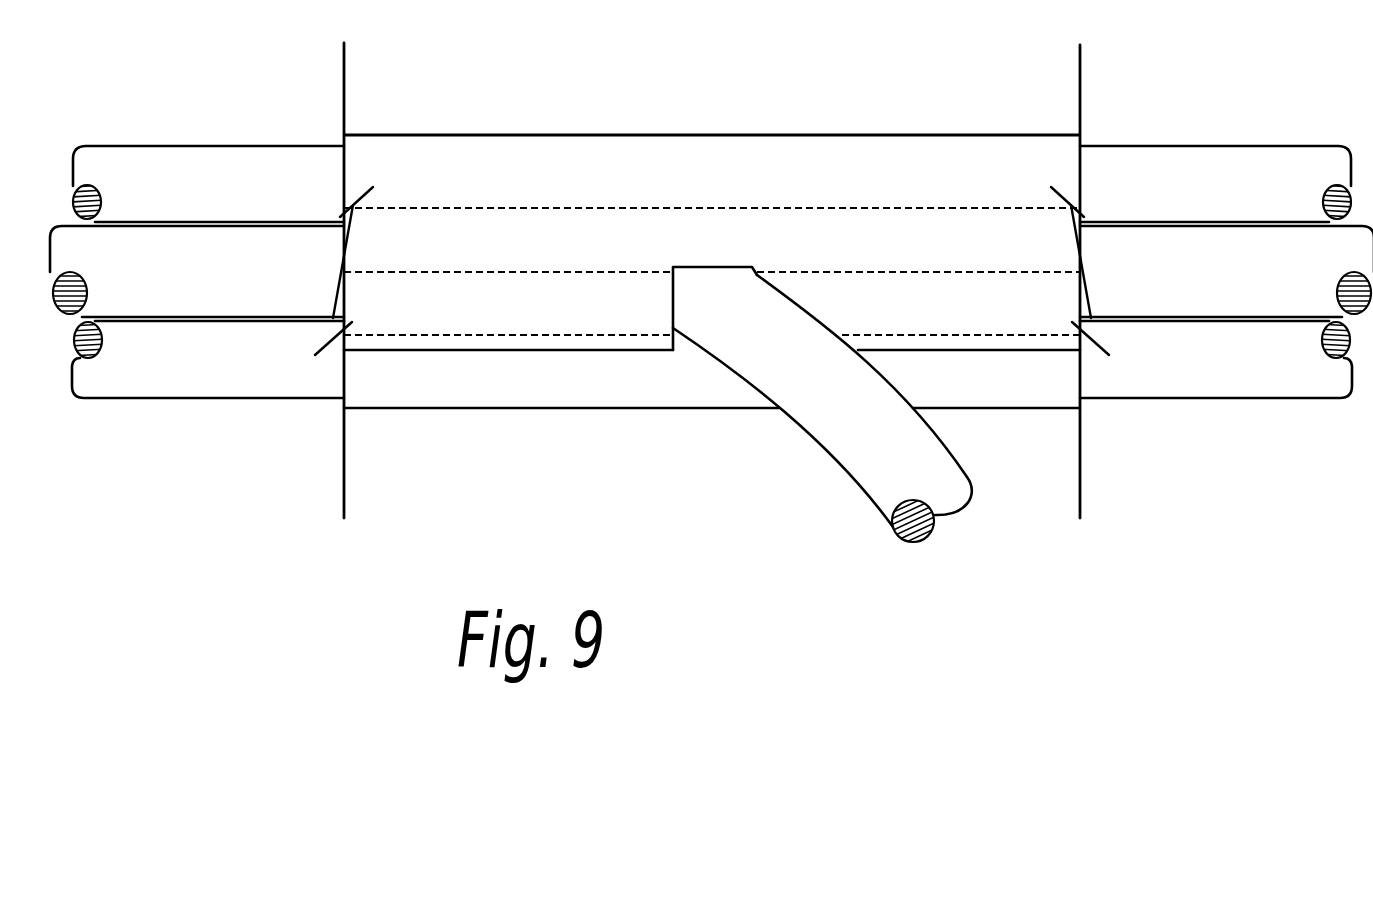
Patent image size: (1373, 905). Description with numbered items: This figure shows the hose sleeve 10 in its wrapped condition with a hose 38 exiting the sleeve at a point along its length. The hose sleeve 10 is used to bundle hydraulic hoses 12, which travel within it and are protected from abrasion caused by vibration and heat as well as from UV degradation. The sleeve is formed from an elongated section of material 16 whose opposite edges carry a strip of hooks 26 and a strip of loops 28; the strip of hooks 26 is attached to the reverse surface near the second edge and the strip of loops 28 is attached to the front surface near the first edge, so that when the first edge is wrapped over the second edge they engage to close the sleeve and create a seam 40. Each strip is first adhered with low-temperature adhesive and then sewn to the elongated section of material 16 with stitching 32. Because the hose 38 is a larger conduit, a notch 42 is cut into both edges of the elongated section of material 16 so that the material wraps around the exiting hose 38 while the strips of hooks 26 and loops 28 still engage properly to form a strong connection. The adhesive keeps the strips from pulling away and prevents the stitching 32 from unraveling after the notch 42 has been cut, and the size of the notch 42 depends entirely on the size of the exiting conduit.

The hose sleeve 10 is at (740, 285).
The hydraulic hoses 12 is at (195, 144).
The elongated section of material 16 is at (870, 172).
The strip of hooks 26 is at (712, 195).
The strip of loops 28 is at (490, 248).
The stitching 32 is at (451, 334).
The hose 38 is at (870, 465).
The seam 40 is at (1056, 352).
The notch 42 is at (673, 303).